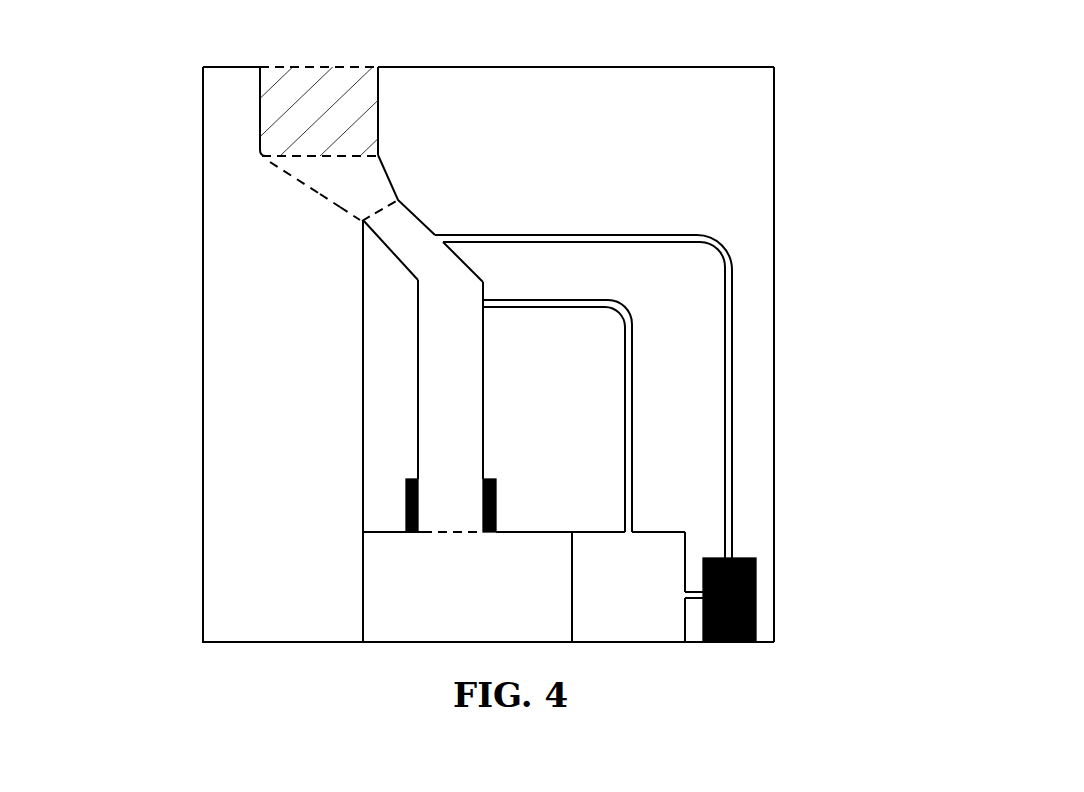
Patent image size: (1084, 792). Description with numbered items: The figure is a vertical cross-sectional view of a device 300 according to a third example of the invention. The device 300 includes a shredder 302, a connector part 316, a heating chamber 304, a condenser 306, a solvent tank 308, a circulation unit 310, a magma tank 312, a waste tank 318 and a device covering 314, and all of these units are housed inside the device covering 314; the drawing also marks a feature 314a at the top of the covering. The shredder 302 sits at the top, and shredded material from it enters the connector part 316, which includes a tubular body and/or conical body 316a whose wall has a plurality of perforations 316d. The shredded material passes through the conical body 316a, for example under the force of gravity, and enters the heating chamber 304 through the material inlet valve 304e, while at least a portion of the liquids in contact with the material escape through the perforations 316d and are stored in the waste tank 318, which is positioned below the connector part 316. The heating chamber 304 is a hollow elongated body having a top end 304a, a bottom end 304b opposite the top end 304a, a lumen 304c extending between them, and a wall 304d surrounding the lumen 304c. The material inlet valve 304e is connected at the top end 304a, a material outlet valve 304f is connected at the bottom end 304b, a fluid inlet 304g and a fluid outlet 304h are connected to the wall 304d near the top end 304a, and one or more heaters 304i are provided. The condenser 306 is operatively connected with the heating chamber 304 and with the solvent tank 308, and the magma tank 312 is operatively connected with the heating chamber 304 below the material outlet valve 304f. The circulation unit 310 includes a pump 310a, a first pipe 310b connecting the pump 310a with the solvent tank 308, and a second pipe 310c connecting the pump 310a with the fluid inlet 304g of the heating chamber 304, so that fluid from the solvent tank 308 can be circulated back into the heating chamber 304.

The device 300 is at (177, 106).
The shredder 302 is at (330, 108).
The heating chamber 304 is at (417, 254).
The top end 304a is at (345, 230).
The bottom end 304b is at (505, 522).
The lumen 304c is at (446, 403).
The wall 304d is at (481, 373).
The material inlet valve 304e is at (396, 217).
The material outlet valve 304f is at (452, 540).
The fluid inlet 304g is at (430, 242).
The fluid outlet 304h is at (476, 305).
The heater 304i is at (470, 521).
The condenser 306 is at (620, 384).
The solvent tank 308 is at (648, 587).
The circulation unit 310 is at (734, 443).
The pump 310a is at (731, 600).
The first pipe 310b is at (693, 590).
The second pipe 310c is at (734, 368).
The magma tank 312 is at (502, 587).
The device covering 314 is at (776, 200).
The top surface of dielectric layer 314a is at (352, 56).
The connector part 316 is at (322, 179).
The conical body 316a is at (330, 176).
The perforations 316d is at (333, 203).
The waste tank 318 is at (488, 354).